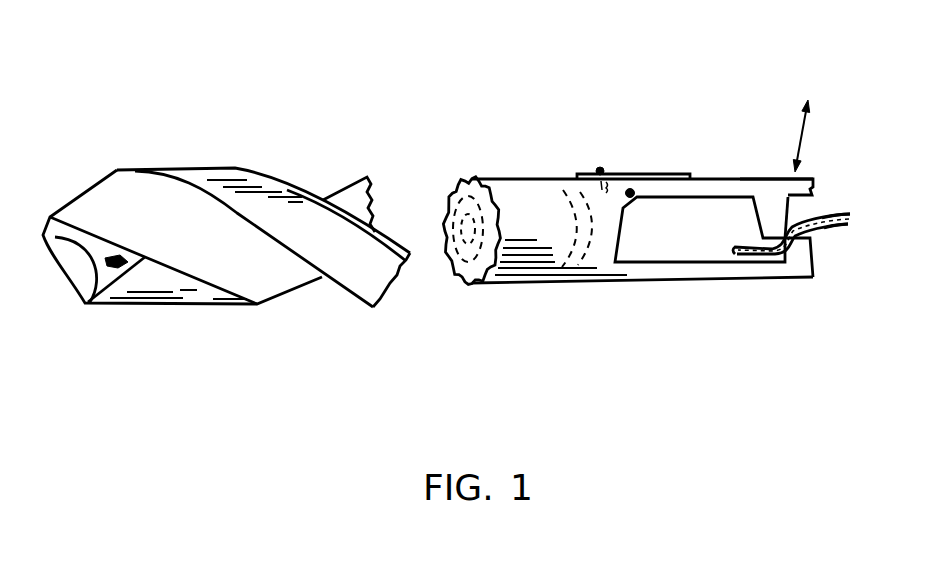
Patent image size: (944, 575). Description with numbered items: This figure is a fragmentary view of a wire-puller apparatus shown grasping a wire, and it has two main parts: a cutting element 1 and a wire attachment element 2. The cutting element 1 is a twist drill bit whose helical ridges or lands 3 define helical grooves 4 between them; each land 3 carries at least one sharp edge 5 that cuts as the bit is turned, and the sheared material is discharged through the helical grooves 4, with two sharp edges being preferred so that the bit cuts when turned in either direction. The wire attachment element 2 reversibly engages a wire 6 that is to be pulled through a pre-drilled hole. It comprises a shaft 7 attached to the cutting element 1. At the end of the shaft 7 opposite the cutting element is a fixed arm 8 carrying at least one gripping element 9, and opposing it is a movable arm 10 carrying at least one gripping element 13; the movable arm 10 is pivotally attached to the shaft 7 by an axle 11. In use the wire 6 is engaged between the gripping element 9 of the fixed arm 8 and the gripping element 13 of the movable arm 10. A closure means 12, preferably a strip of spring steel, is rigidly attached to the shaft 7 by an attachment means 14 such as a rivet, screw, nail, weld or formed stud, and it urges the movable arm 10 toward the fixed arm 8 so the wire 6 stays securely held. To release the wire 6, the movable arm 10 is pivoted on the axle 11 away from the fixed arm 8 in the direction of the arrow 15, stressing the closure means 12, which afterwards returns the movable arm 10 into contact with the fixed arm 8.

The cutting element 1 is at (200, 53).
The wire attachment element 2 is at (660, 38).
The land 3 is at (365, 282).
The helical groove 4 is at (120, 200).
The sharp edge 5 is at (323, 200).
The wire 6 is at (830, 229).
The shaft 7 is at (577, 282).
The fixed arm 8 is at (723, 280).
The gripping element 9 is at (815, 247).
The movable arm 10 is at (740, 180).
The axle 11 is at (633, 192).
The closure means 12 is at (680, 173).
The gripping element 13 is at (777, 212).
The attachment means 14 is at (598, 170).
The arrow 15 is at (806, 125).